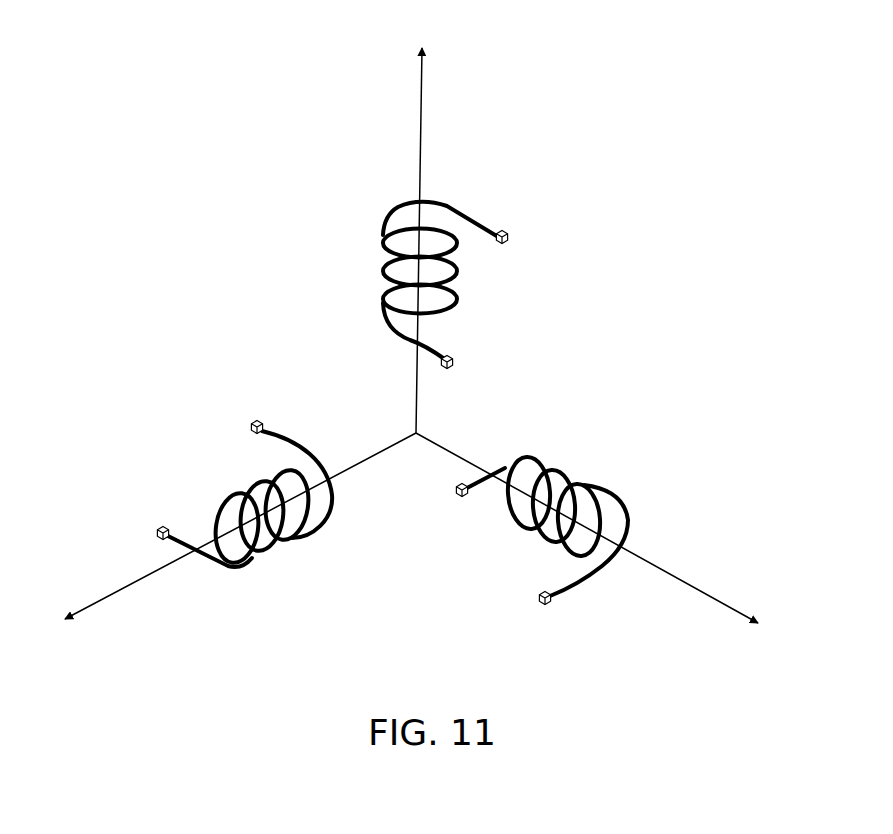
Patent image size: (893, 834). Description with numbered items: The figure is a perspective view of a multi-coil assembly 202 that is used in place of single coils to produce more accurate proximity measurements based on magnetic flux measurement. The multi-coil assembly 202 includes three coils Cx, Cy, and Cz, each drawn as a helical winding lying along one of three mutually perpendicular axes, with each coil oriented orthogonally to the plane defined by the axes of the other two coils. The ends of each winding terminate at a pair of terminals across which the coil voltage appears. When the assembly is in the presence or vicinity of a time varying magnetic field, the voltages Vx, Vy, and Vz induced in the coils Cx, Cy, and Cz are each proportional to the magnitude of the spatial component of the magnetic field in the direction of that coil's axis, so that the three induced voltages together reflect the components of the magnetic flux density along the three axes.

The multi-coil assembly 202 is at (606, 366).
The coil Cz is at (385, 215).
The coil Cy is at (268, 553).
The coil Cx is at (589, 486).
The induced voltage Vz is at (501, 250).
The induced voltage Vy is at (246, 437).
The induced voltage Vx is at (536, 590).